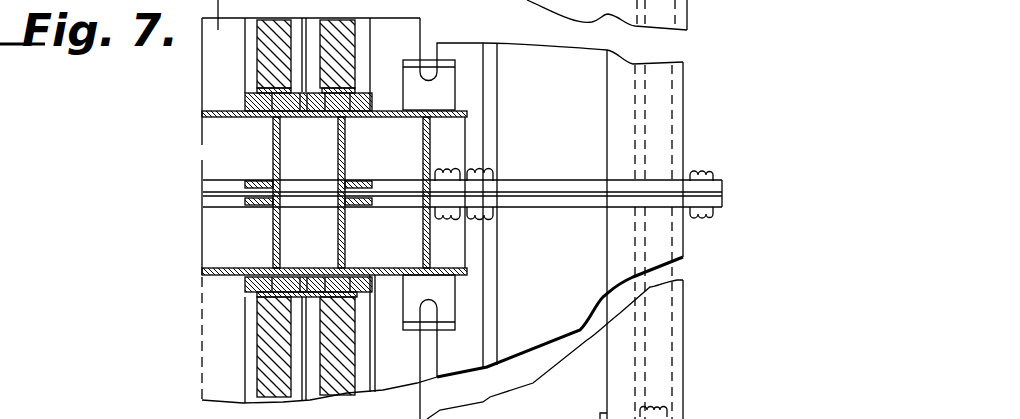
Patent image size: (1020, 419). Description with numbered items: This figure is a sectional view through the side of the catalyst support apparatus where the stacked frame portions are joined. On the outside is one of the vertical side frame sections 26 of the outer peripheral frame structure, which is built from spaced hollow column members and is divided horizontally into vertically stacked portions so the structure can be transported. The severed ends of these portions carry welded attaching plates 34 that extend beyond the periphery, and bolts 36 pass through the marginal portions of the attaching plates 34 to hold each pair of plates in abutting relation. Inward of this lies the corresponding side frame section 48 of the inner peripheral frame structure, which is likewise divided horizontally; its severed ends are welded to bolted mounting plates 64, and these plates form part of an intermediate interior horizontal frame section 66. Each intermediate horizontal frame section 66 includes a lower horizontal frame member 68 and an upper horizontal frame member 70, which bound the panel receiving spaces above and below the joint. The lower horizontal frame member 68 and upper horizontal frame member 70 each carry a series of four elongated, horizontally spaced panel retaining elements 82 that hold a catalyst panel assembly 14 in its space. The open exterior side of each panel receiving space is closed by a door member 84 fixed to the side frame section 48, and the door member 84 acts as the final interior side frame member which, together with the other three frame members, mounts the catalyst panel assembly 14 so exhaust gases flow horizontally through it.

The catalyst panel assembly 14 is at (301, 262).
The side frame section 26 is at (490, 105).
The attaching plate 34 is at (735, 190).
The bolt 36 is at (715, 176).
The side frame section 48 is at (555, 349).
The bolted mounting plate 64 is at (488, 202).
The intermediate interior horizontal frame section 66 is at (431, 152).
The lower horizontal frame member 68 is at (205, 272).
The upper horizontal frame member 70 is at (218, 111).
The panel retaining element 82 is at (335, 112).
The door member 84 is at (217, 355).